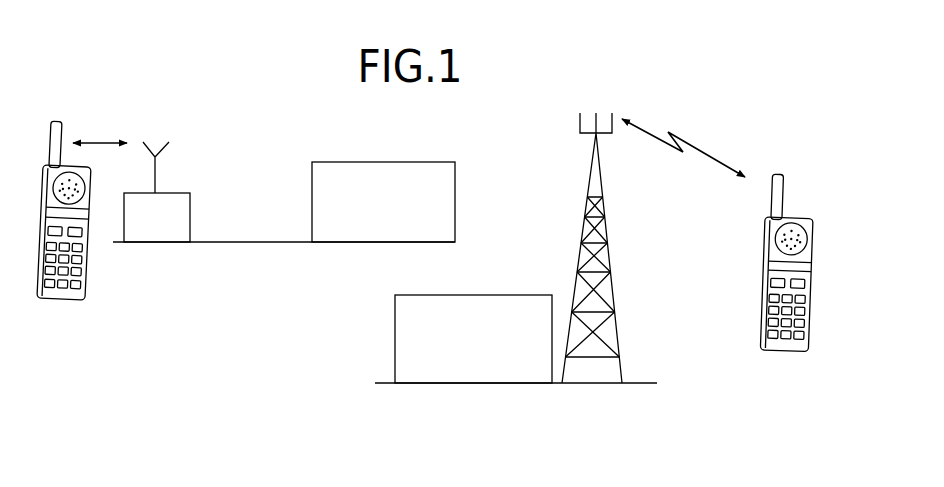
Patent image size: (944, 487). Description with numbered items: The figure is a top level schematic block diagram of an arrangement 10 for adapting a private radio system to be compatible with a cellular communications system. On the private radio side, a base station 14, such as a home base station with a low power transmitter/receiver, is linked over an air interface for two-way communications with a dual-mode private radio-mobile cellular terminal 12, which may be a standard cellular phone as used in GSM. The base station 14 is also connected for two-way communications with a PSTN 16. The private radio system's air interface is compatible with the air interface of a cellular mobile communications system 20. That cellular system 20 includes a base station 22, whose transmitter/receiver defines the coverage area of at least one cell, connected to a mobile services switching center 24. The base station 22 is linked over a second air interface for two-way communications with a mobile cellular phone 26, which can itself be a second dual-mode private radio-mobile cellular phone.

The cordless telephone system 10 is at (128, 92).
The dual-mode private radio-mobile cellular terminal 12 is at (78, 300).
The base station 14 is at (179, 193).
The PSTN 16 is at (435, 162).
The cellular mobile communications system 20 is at (737, 136).
The base station 22 is at (605, 233).
The mobile services switching center 24 is at (450, 295).
The mobile cellular phone 26 is at (808, 342).